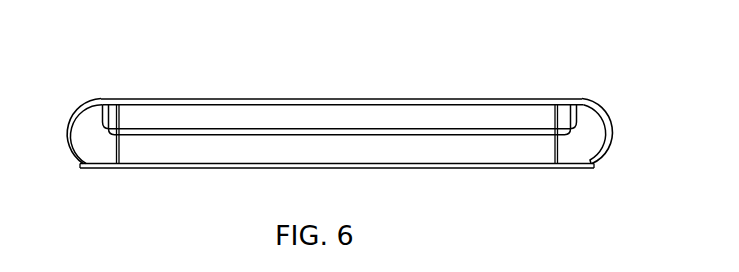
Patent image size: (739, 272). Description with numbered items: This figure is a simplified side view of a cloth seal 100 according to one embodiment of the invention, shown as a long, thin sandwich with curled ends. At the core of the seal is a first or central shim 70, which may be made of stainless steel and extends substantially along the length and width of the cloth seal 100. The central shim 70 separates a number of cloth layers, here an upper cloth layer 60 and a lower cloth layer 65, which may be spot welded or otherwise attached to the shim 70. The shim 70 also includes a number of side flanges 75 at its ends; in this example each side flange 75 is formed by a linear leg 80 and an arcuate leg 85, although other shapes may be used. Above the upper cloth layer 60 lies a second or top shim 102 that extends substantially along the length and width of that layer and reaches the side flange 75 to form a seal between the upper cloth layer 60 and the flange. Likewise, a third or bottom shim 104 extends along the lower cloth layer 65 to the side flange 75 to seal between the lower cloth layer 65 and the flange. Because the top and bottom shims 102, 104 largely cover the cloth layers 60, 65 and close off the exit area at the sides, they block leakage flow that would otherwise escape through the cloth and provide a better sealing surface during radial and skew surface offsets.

The cloth seal 100 is at (373, 38).
The second/top shim/seal 102 is at (313, 98).
The third/bottom shim/seal 104 is at (339, 163).
The first/central shim 70 is at (493, 134).
The upper cloth layer 60 is at (116, 106).
The lower cloth layer 65 is at (114, 157).
The side flange 75 is at (63, 151).
The linear leg 80 is at (571, 105).
The arcuate leg 85 is at (70, 113).